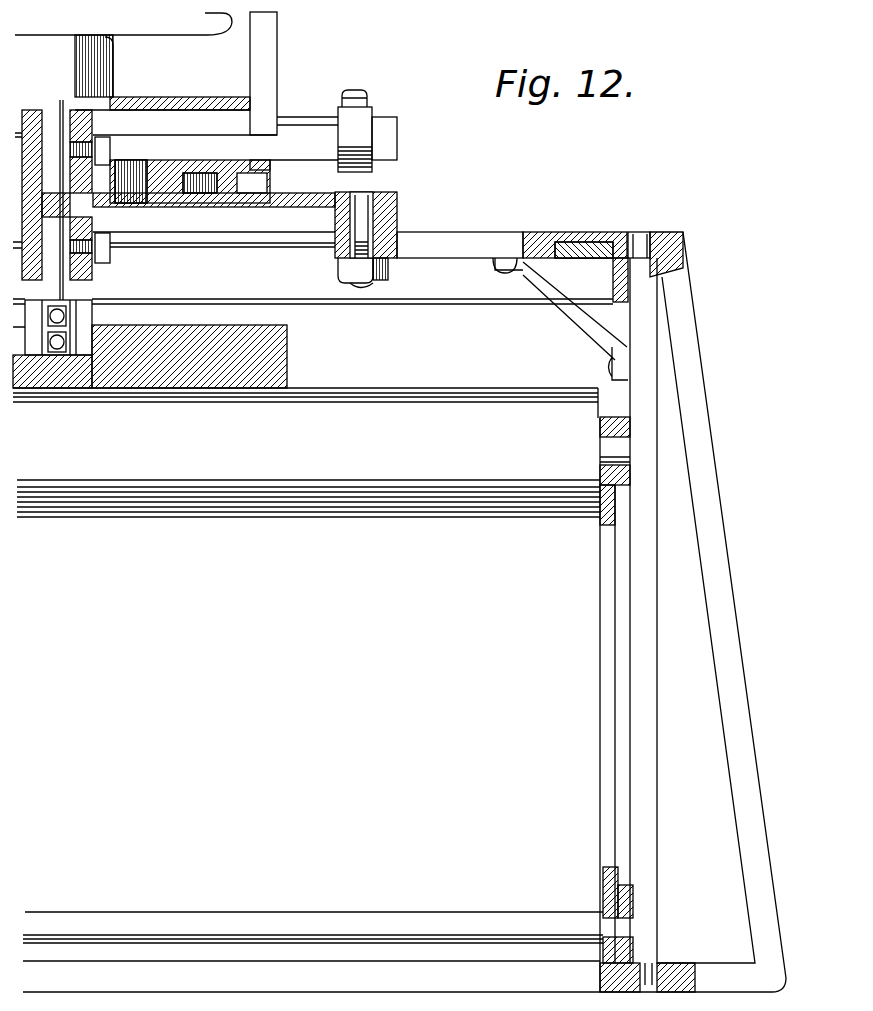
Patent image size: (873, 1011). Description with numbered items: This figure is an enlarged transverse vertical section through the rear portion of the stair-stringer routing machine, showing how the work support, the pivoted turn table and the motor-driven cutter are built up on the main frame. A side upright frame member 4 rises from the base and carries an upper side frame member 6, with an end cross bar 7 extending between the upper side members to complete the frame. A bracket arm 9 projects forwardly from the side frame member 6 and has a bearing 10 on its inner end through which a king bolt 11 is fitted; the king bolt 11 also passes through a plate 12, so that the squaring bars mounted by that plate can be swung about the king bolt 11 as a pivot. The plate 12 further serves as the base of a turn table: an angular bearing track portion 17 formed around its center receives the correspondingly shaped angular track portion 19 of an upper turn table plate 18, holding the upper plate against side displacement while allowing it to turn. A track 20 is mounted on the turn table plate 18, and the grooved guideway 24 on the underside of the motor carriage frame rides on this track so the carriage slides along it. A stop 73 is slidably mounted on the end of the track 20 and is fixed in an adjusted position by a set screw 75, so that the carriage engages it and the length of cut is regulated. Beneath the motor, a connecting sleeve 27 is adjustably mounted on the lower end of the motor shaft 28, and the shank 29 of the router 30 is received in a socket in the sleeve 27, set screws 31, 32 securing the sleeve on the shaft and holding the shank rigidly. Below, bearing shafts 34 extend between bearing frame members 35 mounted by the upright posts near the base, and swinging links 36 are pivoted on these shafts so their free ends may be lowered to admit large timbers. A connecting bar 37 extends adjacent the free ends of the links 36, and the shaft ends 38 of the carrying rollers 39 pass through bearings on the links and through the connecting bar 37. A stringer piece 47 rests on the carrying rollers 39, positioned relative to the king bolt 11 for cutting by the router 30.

The side upright frame member 4 is at (655, 710).
The upper side frame member 6 is at (597, 235).
The end cross bar 7 is at (459, 298).
The bracket arm 9 is at (500, 240).
The bearing 10 is at (338, 258).
The king bolt 11 is at (397, 225).
The plate 12 is at (282, 212).
The angular bearing track portion 17 is at (165, 205).
The upper turn table plate 18 is at (279, 172).
The angular track portion 19 is at (168, 160).
The track 20 is at (388, 140).
The grooved guideway 24 is at (265, 121).
The connecting sleeve 27 is at (90, 185).
The motor shaft 28 is at (57, 122).
The shank 29 is at (62, 270).
The router 30 is at (72, 328).
The set screw 31 is at (100, 135).
The set screw 32 is at (100, 242).
The bearing shaft 34 is at (278, 913).
The bearing frame member 35 is at (633, 898).
The swinging link 36 is at (600, 700).
The connecting bar 37 is at (630, 476).
The shaft end 38 is at (625, 440).
The carrying roller 39 is at (427, 505).
The stringer piece 47 is at (287, 370).
The stop 73 is at (360, 158).
The set screw 75 is at (358, 92).